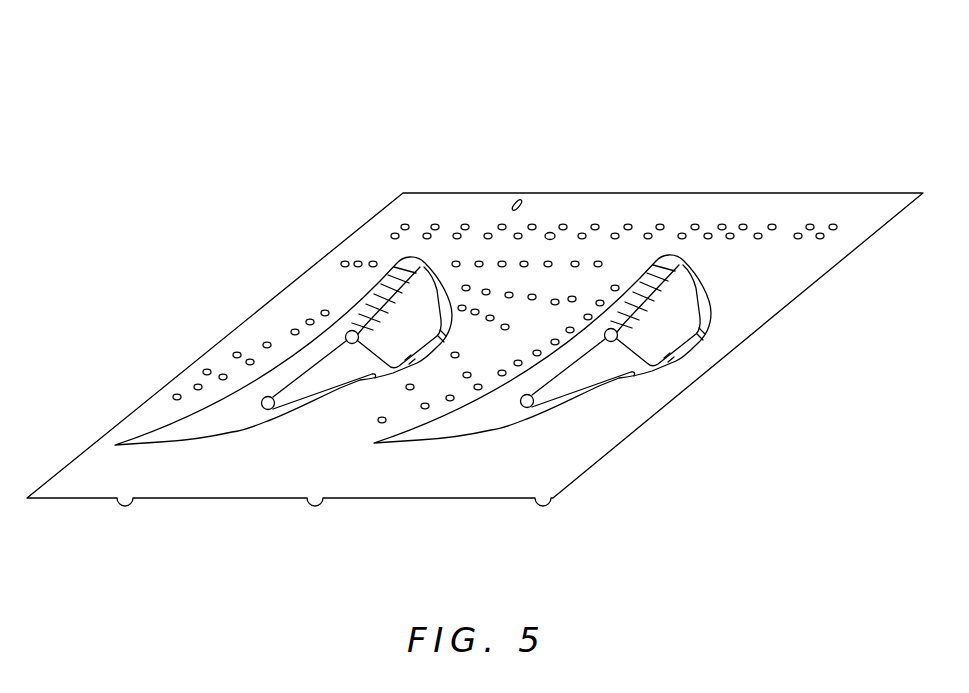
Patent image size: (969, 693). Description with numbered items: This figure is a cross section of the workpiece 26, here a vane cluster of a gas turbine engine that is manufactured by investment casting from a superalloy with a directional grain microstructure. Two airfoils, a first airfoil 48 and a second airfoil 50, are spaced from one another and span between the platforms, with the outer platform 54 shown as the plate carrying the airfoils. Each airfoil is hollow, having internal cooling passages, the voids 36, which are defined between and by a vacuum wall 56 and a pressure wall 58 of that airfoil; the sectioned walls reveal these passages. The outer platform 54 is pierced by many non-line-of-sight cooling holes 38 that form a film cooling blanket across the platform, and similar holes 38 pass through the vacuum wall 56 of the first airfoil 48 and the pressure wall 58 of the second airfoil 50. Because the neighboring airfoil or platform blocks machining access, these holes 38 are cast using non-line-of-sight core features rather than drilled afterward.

The workpiece 26 is at (848, 110).
The internal voids and/or passages 36 is at (400, 307).
The non-line-of-sight holes 38 is at (595, 334).
The first airfoil 48 is at (232, 440).
The second airfoil 50 is at (716, 322).
The outer platform 54 is at (478, 478).
The vacuum wall 56 is at (315, 405).
The pressure wall 58 is at (278, 372).